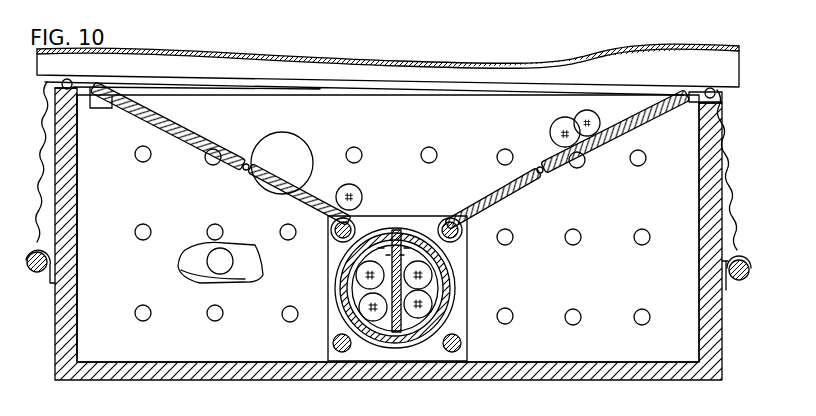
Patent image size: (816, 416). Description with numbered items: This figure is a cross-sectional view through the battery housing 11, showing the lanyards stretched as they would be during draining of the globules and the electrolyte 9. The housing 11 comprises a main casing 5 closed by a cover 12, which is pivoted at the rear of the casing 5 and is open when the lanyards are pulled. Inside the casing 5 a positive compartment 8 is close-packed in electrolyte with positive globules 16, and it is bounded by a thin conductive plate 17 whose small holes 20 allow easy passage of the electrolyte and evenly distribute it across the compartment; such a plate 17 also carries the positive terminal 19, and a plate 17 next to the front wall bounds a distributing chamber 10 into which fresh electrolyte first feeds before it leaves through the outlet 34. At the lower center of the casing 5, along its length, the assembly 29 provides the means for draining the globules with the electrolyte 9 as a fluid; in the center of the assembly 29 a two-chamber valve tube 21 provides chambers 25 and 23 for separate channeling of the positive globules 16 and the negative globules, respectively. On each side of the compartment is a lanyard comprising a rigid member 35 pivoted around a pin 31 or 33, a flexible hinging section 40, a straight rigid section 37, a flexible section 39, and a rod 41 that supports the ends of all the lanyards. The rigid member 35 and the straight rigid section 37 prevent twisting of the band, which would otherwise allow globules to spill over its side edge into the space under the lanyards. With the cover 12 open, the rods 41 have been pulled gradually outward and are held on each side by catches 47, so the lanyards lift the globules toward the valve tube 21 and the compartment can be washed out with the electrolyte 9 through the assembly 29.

The main casing 5 is at (723, 330).
The positive compartment 8 is at (109, 175).
The electrolyte 9 is at (410, 233).
The distributing chamber 10 is at (250, 270).
The battery housing 11 is at (30, 338).
The cover 12 is at (671, 79).
The positive globules 16 is at (551, 128).
The plate 17 is at (447, 136).
The positive terminal 19 is at (301, 140).
The small holes 20 is at (352, 147).
The two-chamber valve tube 21 is at (431, 288).
The chamber 23 is at (357, 290).
The chamber 25 is at (436, 290).
The assembly 29 is at (397, 265).
The pin 31 is at (327, 240).
The pin 33 is at (466, 229).
The outlet 34 is at (237, 246).
The rigid member 35 is at (498, 191).
The straight rigid section 37 is at (632, 133).
The flexible section 39 is at (737, 158).
The flexible hinging section 40 is at (544, 179).
The rods 41 is at (741, 289).
The catches 47 is at (738, 257).